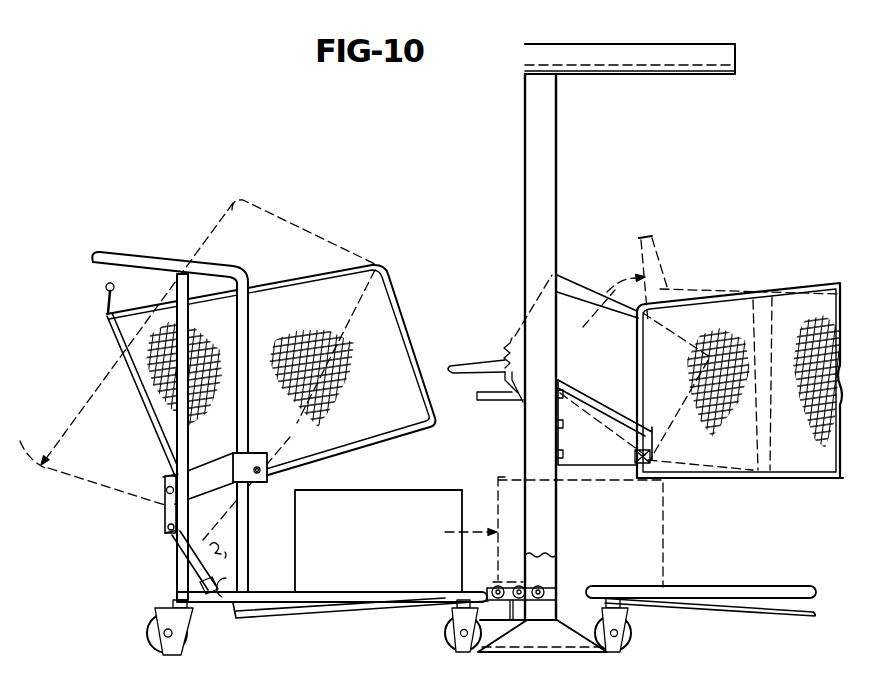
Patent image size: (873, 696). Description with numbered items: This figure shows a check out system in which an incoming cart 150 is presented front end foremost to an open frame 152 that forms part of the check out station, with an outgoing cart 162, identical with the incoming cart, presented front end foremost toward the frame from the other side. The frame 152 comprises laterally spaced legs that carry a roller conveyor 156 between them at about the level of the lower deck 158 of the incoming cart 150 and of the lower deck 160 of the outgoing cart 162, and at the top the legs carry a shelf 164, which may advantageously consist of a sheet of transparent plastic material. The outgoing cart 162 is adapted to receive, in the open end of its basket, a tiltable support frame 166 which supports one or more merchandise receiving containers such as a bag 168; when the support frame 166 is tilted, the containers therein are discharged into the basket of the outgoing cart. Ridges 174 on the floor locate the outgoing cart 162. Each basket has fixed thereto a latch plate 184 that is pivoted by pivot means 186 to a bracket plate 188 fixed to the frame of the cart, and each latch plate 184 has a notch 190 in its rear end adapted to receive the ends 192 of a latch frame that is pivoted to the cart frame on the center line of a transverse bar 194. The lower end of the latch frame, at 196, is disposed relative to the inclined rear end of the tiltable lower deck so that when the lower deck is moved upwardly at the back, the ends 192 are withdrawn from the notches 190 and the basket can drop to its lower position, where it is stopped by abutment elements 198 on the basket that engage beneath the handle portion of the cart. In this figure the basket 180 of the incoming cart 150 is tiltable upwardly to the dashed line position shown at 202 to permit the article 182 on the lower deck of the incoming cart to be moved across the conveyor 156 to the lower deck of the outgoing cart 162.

The incoming cart 150 is at (134, 230).
The open frame 152 is at (517, 142).
The roller conveyor 156 is at (508, 652).
The lower deck 158 is at (333, 617).
The lower deck 160 is at (768, 612).
The outgoing cart 162 is at (727, 618).
The shelf 164 is at (617, 67).
The tiltable support frame 166 is at (566, 332).
The bag 168 is at (578, 293).
The ridges 174 is at (147, 648).
The basket 180 is at (388, 317).
The article 182 is at (497, 479).
The latch plate 184 is at (208, 467).
The pivot means 186 is at (268, 465).
The bracket plate 188 is at (258, 483).
The notch 190 is at (172, 511).
The ends of latch frame 192 is at (164, 491).
The transverse bar 194 is at (171, 538).
The lower end of latch frame 196 is at (227, 588).
The abutment elements 198 is at (107, 315).
The dashed line position 202 is at (268, 210).